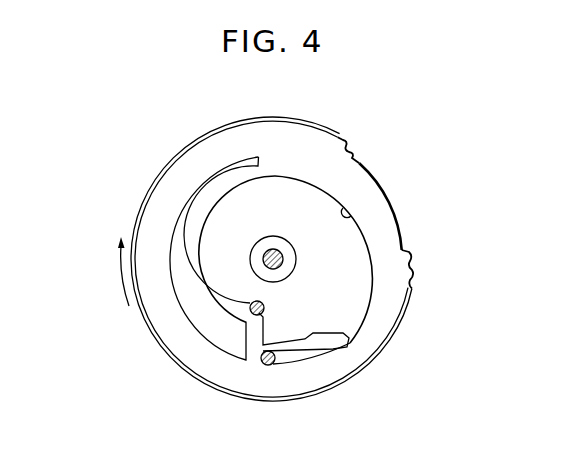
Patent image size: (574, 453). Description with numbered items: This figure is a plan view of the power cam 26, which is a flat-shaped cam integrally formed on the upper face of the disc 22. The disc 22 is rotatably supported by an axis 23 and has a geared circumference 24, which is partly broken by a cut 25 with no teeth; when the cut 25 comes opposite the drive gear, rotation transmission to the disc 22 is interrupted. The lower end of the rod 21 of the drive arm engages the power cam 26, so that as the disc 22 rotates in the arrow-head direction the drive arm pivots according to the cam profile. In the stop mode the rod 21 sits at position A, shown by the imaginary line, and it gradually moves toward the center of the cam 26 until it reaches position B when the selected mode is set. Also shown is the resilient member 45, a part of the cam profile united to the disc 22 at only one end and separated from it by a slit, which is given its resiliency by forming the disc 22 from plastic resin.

The rod 21 is at (252, 301).
The disc 22 is at (147, 168).
The axis 23 is at (284, 256).
The geared circumference 24 is at (347, 129).
The cut 25 is at (409, 261).
The power cam 26 is at (350, 214).
The resilient member 45 is at (313, 352).